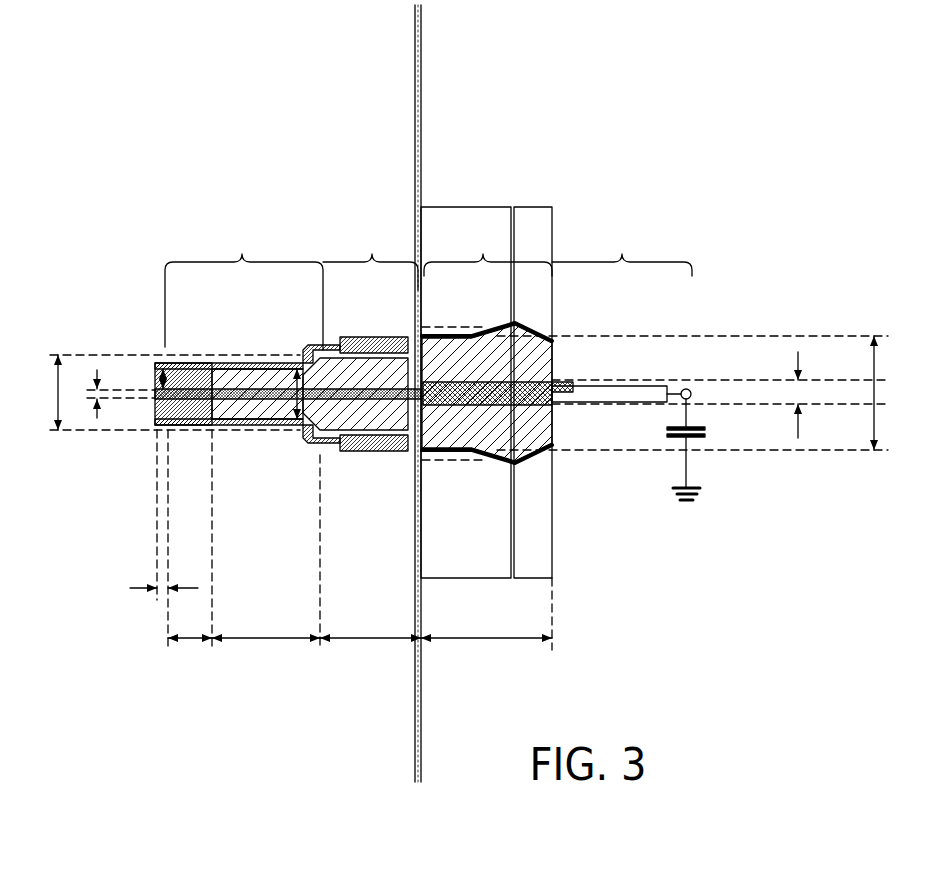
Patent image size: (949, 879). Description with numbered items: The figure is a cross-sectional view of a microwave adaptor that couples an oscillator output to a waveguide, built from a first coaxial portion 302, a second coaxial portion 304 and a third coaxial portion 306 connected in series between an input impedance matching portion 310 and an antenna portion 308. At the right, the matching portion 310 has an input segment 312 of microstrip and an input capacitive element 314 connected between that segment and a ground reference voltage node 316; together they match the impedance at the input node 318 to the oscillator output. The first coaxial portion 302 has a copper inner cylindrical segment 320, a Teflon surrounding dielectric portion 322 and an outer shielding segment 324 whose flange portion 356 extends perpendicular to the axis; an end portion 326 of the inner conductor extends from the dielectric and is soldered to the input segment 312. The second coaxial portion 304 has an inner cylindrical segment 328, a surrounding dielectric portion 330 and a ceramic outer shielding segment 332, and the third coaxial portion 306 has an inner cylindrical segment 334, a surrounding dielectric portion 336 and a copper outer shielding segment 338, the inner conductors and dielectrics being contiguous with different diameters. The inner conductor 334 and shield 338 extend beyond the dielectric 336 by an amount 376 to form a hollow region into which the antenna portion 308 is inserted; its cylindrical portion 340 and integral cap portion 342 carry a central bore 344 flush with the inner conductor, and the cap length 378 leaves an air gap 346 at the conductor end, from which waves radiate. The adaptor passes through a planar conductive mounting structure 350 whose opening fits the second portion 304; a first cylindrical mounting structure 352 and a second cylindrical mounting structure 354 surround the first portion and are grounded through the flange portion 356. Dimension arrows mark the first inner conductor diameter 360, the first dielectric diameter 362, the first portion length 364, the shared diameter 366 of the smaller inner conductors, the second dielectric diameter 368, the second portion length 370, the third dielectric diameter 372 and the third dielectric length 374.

The first coaxial portion 302 is at (488, 251).
The second coaxial portion 304 is at (370, 258).
The third coaxial portion 306 is at (244, 288).
The antenna portion 308 is at (152, 412).
The input impedance matching portion 310 is at (622, 251).
The input segment 312 is at (598, 402).
The input capacitive element 314 is at (662, 437).
The ground reference voltage node 316 is at (695, 488).
The input node 318 is at (689, 388).
The inner cylindrical segment 320 is at (463, 380).
The surrounding dielectric portion 322 is at (497, 460).
The outer shielding segment 324 is at (457, 452).
The end portion 326 is at (566, 380).
The inner cylindrical segment 328 is at (343, 394).
The surrounding dielectric portion 330 is at (373, 451).
The outer shielding segment 332 is at (370, 337).
The inner cylindrical segment 334 is at (238, 363).
The surrounding dielectric portion 336 is at (241, 420).
The outer shielding segment 338 is at (300, 360).
The cylindrical portion 340 is at (198, 426).
The cap portion 342 is at (164, 425).
The central bore 344 is at (158, 396).
The air gap 346 is at (158, 368).
The mounting structure 350 is at (415, 96).
The first cylindrical mounting structure 352 is at (462, 207).
The second cylindrical mounting structure 354 is at (536, 207).
The flange portion 356 is at (515, 322).
The diameter of inner conductor of first coaxial portion 360 is at (800, 427).
The nominal diameter of surrounding dielectric portion of first coaxial portion 362 is at (876, 392).
The length of first coaxial portion 364 is at (490, 640).
The diameter of inner conductors of second and third coaxial portions 366 is at (96, 422).
The nominal diameter of surrounding dielectric portion of second coaxial portion 368 is at (55, 392).
The length of second coaxial portion 370 is at (375, 640).
The diameter of surrounding dielectric portion of third coaxial portion 372 is at (296, 419).
The length of surrounding dielectric portion of third coaxial portion 374 is at (268, 640).
The extension length of inner conductor and outer shielding portion 376 is at (192, 640).
The length of cap portion 378 is at (138, 588).